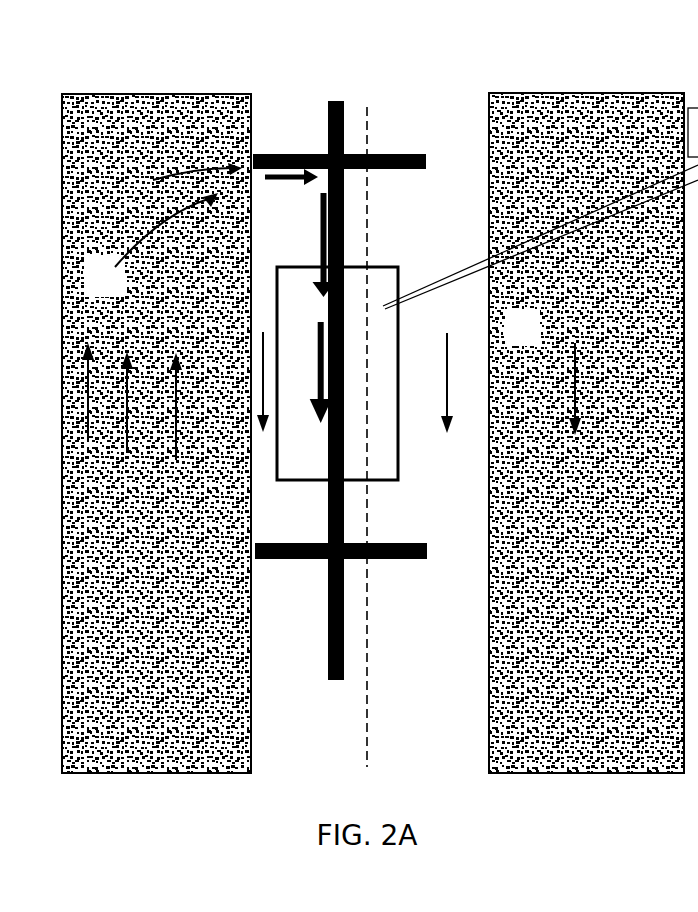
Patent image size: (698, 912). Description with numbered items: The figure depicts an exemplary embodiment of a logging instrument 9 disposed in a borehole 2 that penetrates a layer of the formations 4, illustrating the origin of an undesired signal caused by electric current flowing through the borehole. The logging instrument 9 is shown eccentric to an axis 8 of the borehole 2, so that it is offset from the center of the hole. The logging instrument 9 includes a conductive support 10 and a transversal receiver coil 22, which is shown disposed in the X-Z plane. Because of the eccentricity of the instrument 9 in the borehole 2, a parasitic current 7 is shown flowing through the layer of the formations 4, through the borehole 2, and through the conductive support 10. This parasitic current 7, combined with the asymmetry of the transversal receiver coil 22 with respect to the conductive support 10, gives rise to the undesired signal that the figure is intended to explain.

The borehole 2 is at (460, 122).
The formations 4 is at (137, 773).
The parasitic current 7 is at (127, 360).
The axis 8 is at (369, 695).
The logging instrument 9 is at (300, 102).
The conductive support 10 is at (332, 660).
The transversal receiver coil 22 is at (400, 440).